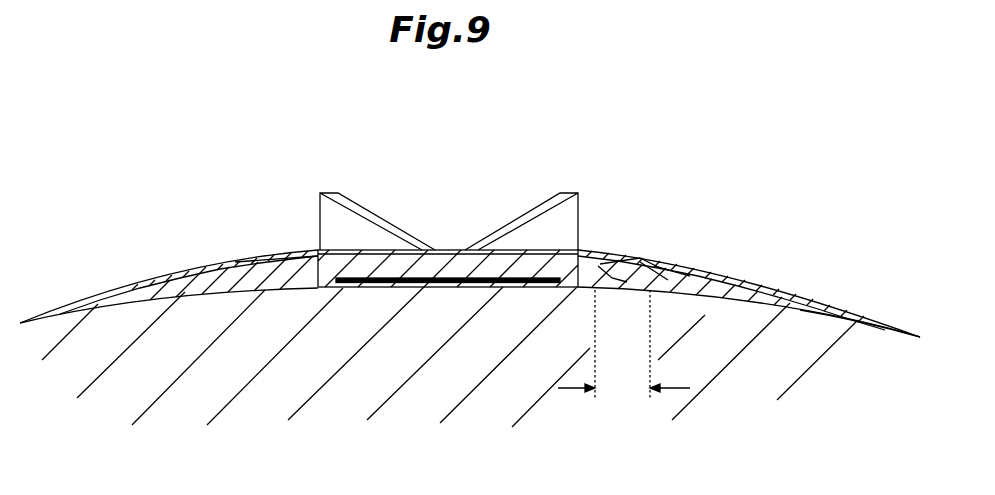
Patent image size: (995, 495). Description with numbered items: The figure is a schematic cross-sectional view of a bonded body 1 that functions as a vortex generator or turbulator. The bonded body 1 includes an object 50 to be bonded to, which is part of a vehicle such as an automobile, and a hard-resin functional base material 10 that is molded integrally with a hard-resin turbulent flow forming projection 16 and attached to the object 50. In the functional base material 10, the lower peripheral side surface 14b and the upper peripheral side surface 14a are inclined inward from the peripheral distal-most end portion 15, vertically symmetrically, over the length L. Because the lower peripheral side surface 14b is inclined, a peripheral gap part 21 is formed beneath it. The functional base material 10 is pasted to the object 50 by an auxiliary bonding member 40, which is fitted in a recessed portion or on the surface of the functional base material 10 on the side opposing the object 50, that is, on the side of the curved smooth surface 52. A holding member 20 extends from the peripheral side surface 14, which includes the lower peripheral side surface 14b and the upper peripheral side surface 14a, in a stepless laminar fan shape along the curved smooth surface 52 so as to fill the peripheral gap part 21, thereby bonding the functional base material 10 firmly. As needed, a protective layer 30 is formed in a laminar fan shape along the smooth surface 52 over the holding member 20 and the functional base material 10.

The bonded body 1 is at (670, 140).
The functional base material 10 is at (596, 251).
The peripheral side surface 14 is at (650, 202).
The upper peripheral side surface 14a is at (627, 282).
The lower peripheral side surface 14b is at (668, 280).
The peripheral distal-most end portion 15 is at (663, 268).
The turbulent flow forming projection 16 is at (553, 203).
The holding member 20 is at (700, 282).
The peripheral gap part 21 is at (624, 346).
The protective layer 30 is at (760, 282).
The auxiliary bonding member 40 is at (445, 284).
The object to be bonded to 50 is at (252, 338).
The smooth surface 52 is at (897, 323).